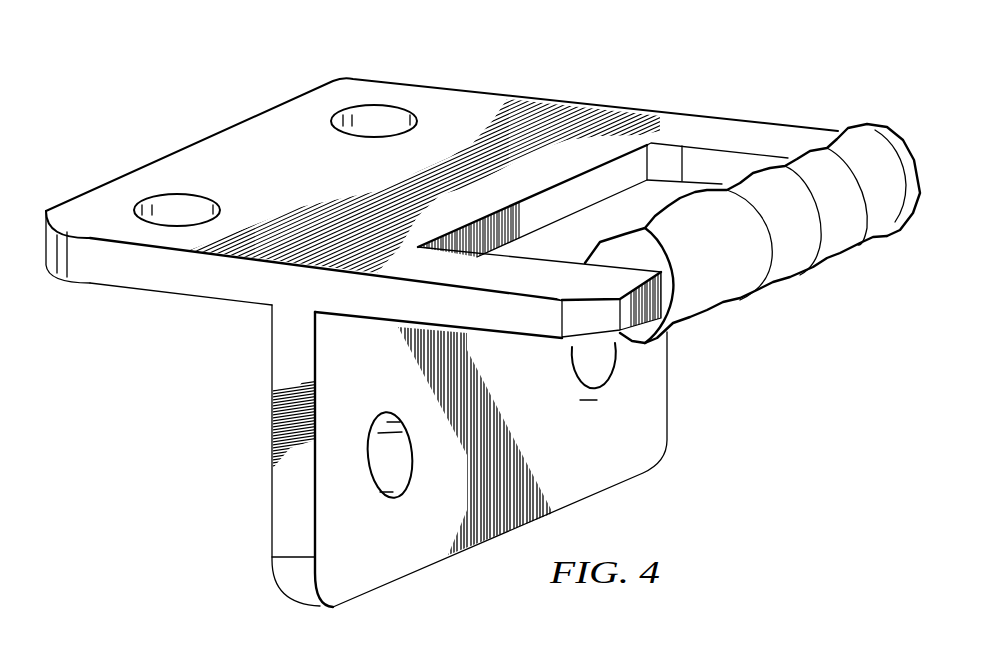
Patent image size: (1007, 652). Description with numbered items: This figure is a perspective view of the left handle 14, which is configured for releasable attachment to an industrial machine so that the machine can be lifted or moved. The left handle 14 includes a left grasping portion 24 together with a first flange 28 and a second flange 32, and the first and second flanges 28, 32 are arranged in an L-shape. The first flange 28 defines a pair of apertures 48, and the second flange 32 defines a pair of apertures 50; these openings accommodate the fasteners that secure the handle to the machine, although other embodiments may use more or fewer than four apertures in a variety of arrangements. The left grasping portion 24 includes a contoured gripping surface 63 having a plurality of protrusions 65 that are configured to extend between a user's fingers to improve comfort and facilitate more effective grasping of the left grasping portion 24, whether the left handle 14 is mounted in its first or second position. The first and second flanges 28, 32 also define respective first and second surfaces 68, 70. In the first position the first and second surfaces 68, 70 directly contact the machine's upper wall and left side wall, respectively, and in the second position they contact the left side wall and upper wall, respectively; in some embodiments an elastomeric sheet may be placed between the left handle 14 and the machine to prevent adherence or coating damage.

The left handle 14 is at (176, 54).
The left grasping portion 24 is at (727, 130).
The first flange 28 is at (150, 280).
The second flange 32 is at (280, 498).
The apertures 48 is at (375, 123).
The apertures 50 is at (397, 470).
The contoured gripping surface 63 is at (698, 322).
The protrusions 65 is at (803, 230).
The first surface 68 is at (213, 300).
The second surface 70 is at (272, 368).